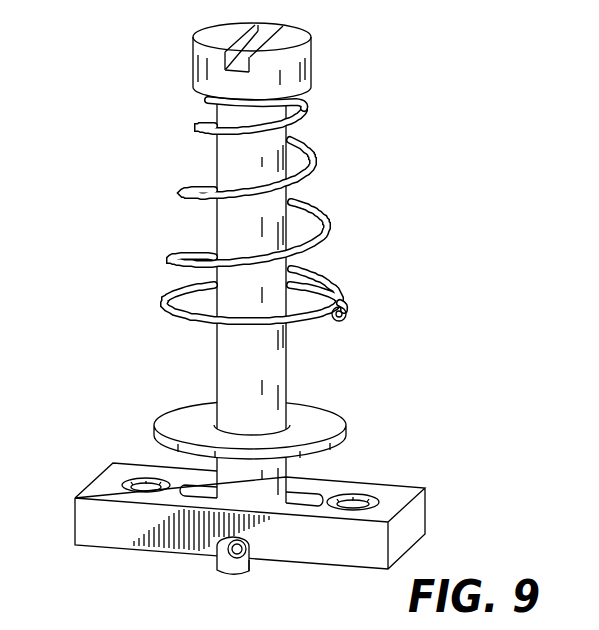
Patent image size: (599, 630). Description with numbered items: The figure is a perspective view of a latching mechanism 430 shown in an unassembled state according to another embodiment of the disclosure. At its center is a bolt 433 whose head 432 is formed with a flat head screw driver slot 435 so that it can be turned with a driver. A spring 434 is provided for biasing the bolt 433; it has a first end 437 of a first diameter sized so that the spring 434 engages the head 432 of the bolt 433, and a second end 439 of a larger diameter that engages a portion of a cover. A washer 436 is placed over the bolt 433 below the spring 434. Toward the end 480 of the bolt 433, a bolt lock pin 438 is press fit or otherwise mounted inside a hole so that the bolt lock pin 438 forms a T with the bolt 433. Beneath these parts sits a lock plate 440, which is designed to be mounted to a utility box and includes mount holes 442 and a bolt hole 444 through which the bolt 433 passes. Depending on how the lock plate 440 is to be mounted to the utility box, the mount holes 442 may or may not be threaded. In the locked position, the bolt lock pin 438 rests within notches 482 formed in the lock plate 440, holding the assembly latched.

The latching mechanism 430 is at (470, 90).
The head 432 is at (312, 58).
The bolt 433 is at (218, 232).
The spring 434 is at (312, 158).
The flat head screw driver slot 435 is at (288, 26).
The washer 436 is at (351, 426).
The first end 437 is at (208, 101).
The bolt lock pin 438 is at (240, 558).
The second end 439 is at (350, 307).
The lock plate 440 is at (425, 517).
The mount holes 442 is at (378, 493).
The bolt hole 444 is at (188, 490).
The end 480 is at (231, 576).
The notches 482 is at (216, 546).